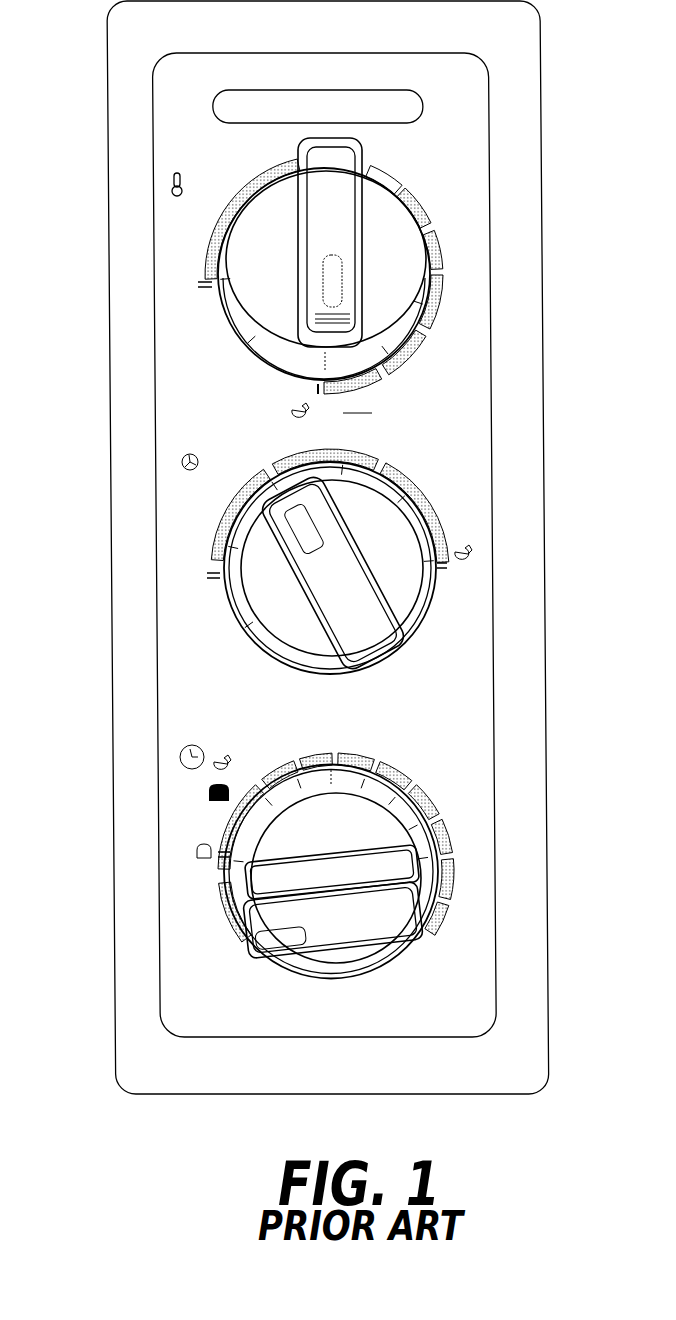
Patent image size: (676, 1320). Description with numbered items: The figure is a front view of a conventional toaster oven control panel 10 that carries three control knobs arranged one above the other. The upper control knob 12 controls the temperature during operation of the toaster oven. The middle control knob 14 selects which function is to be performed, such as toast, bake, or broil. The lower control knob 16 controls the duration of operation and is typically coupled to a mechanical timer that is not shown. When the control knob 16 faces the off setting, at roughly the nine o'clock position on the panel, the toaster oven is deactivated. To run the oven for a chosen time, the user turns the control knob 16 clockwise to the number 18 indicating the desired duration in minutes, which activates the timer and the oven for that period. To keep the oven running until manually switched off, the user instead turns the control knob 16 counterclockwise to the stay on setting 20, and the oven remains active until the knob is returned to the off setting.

The control panel 10 is at (150, 110).
The control knob 12 is at (250, 292).
The control knob 14 is at (257, 602).
The control knob 16 is at (280, 837).
The number 18 is at (395, 763).
The stay on setting 20 is at (210, 956).